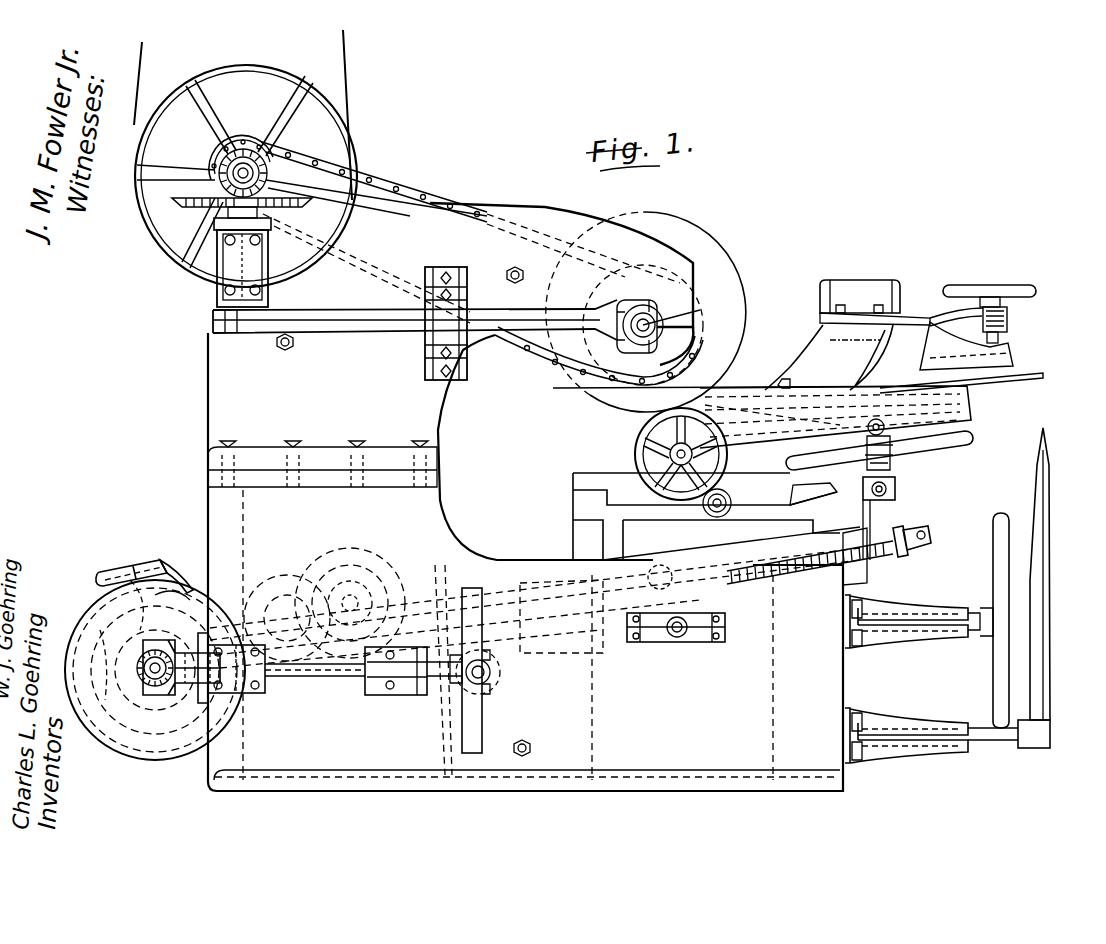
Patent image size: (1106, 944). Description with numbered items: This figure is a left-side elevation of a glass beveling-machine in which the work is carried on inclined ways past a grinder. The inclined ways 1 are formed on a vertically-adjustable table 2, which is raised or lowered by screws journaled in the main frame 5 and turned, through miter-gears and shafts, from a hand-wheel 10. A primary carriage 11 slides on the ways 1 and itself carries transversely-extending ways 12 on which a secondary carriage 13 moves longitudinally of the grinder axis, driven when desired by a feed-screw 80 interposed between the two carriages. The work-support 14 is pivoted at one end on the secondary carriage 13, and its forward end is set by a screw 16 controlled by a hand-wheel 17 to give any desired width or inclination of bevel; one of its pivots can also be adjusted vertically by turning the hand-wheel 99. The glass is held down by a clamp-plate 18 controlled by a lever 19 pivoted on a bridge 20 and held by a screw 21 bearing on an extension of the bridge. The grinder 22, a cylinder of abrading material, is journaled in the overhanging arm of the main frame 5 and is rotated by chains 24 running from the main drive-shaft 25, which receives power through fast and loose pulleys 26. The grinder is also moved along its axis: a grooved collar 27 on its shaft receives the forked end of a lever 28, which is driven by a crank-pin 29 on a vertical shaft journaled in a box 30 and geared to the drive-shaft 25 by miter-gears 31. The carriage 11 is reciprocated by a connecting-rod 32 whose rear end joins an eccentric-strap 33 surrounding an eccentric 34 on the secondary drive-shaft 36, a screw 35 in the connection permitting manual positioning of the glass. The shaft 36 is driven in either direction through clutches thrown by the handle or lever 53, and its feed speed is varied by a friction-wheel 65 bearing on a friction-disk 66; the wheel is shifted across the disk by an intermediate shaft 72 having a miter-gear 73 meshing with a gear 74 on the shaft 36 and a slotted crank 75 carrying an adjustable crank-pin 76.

The inclined ways 1 is at (850, 548).
The vertically-adjustable table 2 is at (860, 585).
The main frame 5 is at (288, 458).
The hand-wheel 10 is at (993, 528).
The primary carriage 11 is at (731, 531).
The transversely-extending ways 12 is at (813, 494).
The secondary carriage 13 is at (858, 482).
The work-support 14 is at (835, 417).
The screw 16 is at (888, 466).
The hand-wheel 17 is at (960, 450).
The clamp-plate 18 is at (725, 410).
The lever 19 is at (950, 325).
The bridge 20 is at (875, 302).
The screw 21 is at (1008, 336).
The grinder 22 is at (612, 386).
The chains 24 is at (462, 210).
The main drive-shaft 25 is at (265, 158).
The fast and loose pulleys 26 is at (355, 124).
The grooved collar 27 is at (700, 290).
The lever 28 is at (410, 333).
The crank-pin 29 is at (253, 335).
The box 30 is at (242, 262).
The miter-gears 31 is at (265, 207).
The connecting-rod 32 is at (503, 580).
The eccentric-strap 33 is at (165, 566).
The eccentric 34 is at (187, 585).
The screw 35 is at (915, 548).
The secondary drive-shaft 36 is at (140, 670).
The handle or lever 53 is at (1048, 617).
The friction-wheel 65 is at (505, 662).
The friction-disk 66 is at (440, 738).
The intermediate shaft 72 is at (315, 678).
The miter-gear 73 is at (220, 700).
The miter-gear 74 is at (140, 660).
The slotted crank 75 is at (485, 700).
The crank-pin 76 is at (492, 675).
The feed-screw 80 is at (712, 512).
The hand-wheel 99 is at (635, 452).